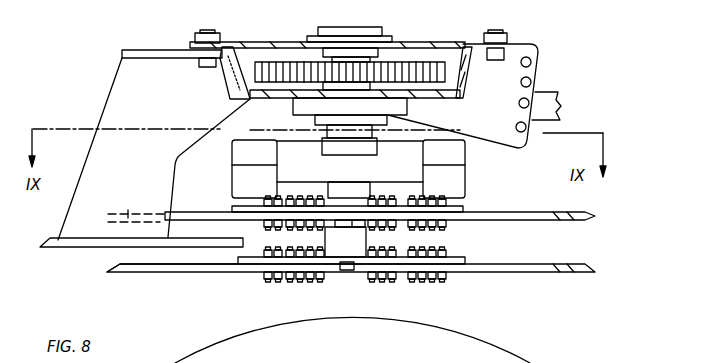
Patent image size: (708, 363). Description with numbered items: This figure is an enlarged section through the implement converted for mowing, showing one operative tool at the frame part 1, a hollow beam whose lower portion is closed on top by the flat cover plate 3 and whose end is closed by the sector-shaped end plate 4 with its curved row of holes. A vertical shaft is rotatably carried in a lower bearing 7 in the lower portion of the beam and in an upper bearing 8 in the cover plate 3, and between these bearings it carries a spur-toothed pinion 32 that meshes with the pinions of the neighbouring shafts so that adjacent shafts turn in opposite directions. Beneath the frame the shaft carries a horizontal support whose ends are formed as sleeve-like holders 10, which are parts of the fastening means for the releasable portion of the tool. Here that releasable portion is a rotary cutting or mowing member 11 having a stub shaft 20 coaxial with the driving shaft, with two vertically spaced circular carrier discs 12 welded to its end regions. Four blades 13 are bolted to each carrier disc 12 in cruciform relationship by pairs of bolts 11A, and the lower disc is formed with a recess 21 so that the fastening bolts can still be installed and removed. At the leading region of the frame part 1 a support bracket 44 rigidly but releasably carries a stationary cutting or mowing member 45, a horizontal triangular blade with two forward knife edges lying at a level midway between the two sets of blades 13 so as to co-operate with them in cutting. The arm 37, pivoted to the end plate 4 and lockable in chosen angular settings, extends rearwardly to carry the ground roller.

The frame part 1 is at (222, 70).
The cover plate 3 is at (238, 42).
The end plate 4 is at (538, 65).
The lower bearing 7 is at (400, 107).
The upper bearing 8 is at (384, 31).
The holder 10 is at (355, 183).
The cutting or mowing member 11 is at (182, 274).
The bolt 11A is at (298, 287).
The carrier disc 12 is at (238, 209).
The blade 13 is at (537, 213).
The stub shaft 20 is at (368, 243).
The recess 21 is at (341, 271).
The pinion 32 is at (290, 78).
The arm 37 is at (562, 104).
The support bracket 44 is at (118, 88).
The stationary cutting or mowing member 45 is at (77, 246).